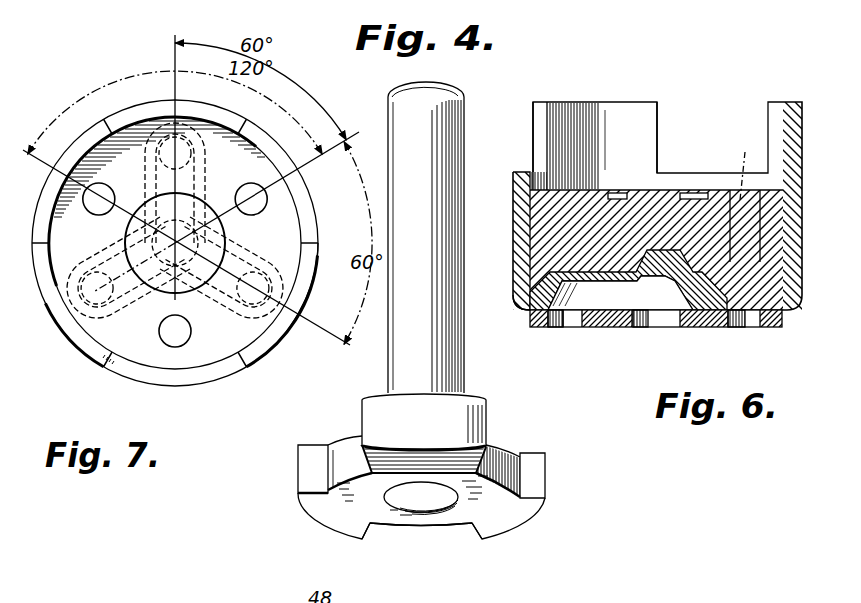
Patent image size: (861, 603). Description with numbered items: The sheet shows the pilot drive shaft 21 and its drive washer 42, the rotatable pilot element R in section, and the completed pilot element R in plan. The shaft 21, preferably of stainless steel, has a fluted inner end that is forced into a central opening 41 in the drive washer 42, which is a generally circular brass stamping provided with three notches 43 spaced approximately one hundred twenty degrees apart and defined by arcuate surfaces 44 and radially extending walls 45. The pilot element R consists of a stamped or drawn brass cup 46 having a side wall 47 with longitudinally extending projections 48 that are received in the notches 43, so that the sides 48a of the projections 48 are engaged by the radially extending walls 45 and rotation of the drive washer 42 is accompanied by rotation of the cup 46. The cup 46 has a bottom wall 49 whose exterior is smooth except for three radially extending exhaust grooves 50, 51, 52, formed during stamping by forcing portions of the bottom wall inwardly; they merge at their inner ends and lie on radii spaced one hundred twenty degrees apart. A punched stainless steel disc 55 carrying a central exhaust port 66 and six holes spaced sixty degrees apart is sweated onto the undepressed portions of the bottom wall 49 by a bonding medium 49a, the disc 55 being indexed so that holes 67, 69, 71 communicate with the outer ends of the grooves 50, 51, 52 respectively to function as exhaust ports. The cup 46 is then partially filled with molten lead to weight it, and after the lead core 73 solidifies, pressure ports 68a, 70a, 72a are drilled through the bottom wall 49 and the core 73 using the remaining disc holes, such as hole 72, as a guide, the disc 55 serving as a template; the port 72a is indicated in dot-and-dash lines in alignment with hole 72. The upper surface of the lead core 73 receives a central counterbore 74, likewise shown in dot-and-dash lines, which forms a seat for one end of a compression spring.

In FIG. 4, the shaft 21 is at (453, 320).
In FIG. 4, the central opening 41 is at (432, 513).
In FIG. 4, the drive washer 42 is at (524, 519).
In FIG. 4, the notches 43 is at (340, 440).
In FIG. 4, the arcuate surfaces 44 is at (352, 432).
In FIG. 4, the radially extending walls 45 is at (299, 468).
In FIG. 7, the cup 46 is at (313, 284).
In FIG. 6, the cup 46 is at (511, 192).
In FIG. 7, the side wall 47 is at (262, 342).
In FIG. 6, the side wall 47 is at (521, 262).
In FIG. 7, the projections 48 is at (142, 111).
In FIG. 6, the projections 48 is at (637, 110).
In FIG. 7, the sides of the projections 48a is at (40, 241).
In FIG. 6, the sides of the projections 48a is at (532, 108).
In FIG. 6, the bottom wall 49 is at (705, 328).
In FIG. 6, the bonding medium 49a is at (540, 327).
In FIG. 7, the exhaust groove 50 is at (205, 170).
In FIG. 7, the exhaust groove 51 is at (130, 300).
In FIG. 6, the exhaust groove 51 is at (597, 300).
In FIG. 7, the exhaust groove 52 is at (222, 300).
In FIG. 6, the disc 55 is at (612, 328).
In FIG. 6, the central exhaust port 66 is at (665, 328).
In FIG. 7, the hole 67 is at (196, 112).
In FIG. 7, the pressure port 68a is at (124, 176).
In FIG. 7, the hole 69 is at (86, 264).
In FIG. 6, the hole 69 is at (580, 328).
In FIG. 7, the pressure port 70a is at (178, 347).
In FIG. 7, the hole 71 is at (278, 264).
In FIG. 6, the hole 72 is at (738, 328).
In FIG. 7, the pressure port 72a is at (264, 201).
In FIG. 6, the pressure port 72a is at (742, 165).
In FIG. 6, the lead core 73 is at (541, 222).
In FIG. 7, the central counterbore 74 is at (221, 228).
In FIG. 6, the central counterbore 74 is at (618, 194).
In FIG. 7, the rotatable pilot element R is at (75, 348).
In FIG. 6, the rotatable pilot element R is at (524, 315).